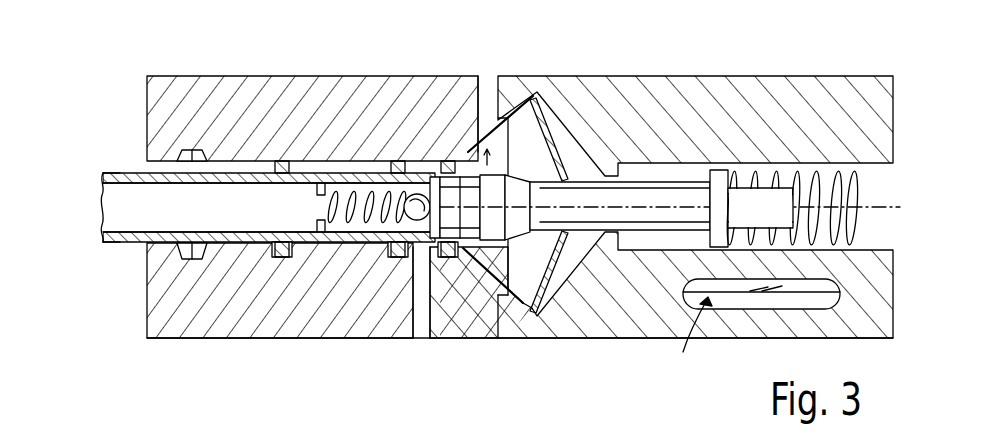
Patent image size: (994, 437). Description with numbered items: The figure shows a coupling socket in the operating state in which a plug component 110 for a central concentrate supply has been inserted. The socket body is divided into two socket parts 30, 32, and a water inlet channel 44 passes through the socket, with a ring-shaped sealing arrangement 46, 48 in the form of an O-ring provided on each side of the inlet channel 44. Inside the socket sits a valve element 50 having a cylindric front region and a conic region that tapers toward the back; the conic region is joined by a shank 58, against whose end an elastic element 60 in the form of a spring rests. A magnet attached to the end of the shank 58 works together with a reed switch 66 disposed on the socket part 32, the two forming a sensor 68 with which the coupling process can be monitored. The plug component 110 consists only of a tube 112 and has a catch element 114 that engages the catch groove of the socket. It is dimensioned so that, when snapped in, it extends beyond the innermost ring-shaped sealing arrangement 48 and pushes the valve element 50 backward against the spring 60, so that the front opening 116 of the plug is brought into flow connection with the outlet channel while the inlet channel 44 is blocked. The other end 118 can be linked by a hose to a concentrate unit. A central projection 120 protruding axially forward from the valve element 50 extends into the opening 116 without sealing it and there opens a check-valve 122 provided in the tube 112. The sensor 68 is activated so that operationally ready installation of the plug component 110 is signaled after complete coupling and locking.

The socket part 30 is at (232, 92).
The socket part 32 is at (672, 94).
The inlet channel 44 is at (420, 300).
The ring-shaped sealing arrangement 46 is at (400, 258).
The ring-shaped sealing arrangement 48 is at (441, 247).
The valve element 50 is at (464, 160).
The shank 58 is at (585, 192).
The elastic element 60 is at (813, 172).
The reed switch 66 is at (748, 307).
The sensor 68 is at (686, 351).
The plug component 110 is at (128, 246).
The tube 112 is at (130, 173).
The catch element 114 is at (192, 150).
The front opening 116 is at (508, 303).
The other end 118 is at (110, 243).
The central projection 120 is at (452, 255).
The check-valve 122 is at (419, 175).